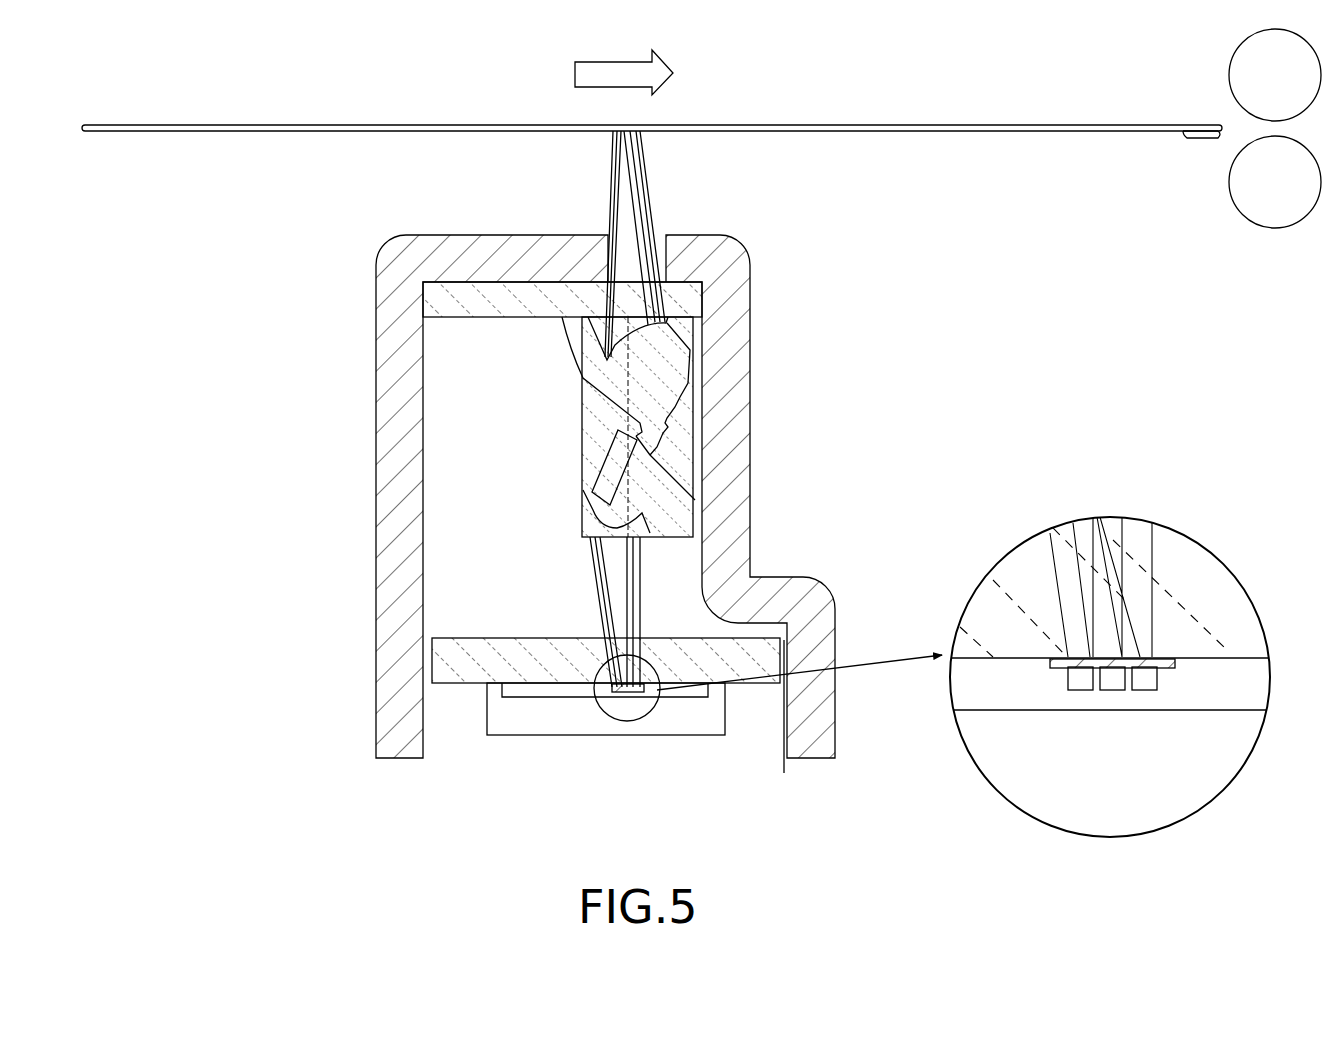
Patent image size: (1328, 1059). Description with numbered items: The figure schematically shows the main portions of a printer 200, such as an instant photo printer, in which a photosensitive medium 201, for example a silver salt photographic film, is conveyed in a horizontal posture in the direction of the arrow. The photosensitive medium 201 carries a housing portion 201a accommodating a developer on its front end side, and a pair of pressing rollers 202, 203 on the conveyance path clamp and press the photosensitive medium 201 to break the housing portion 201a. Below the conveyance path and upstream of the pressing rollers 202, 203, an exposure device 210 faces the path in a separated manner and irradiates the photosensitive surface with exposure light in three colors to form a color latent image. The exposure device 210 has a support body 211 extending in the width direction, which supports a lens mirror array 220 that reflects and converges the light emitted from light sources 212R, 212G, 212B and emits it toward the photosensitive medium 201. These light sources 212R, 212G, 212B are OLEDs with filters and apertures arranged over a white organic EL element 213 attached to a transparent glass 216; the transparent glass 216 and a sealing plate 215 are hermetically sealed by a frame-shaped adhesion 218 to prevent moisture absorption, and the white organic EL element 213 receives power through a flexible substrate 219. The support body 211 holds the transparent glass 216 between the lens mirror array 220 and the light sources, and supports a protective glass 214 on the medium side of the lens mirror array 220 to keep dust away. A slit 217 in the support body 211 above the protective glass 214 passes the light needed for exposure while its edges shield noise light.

The printer 200 is at (701, 140).
The photosensitive medium 201 is at (180, 123).
The housing portion 201a is at (1206, 140).
The pressing roller 202 is at (1228, 72).
The pressing roller 203 is at (1269, 229).
The exposure device 210 is at (659, 482).
The support body 211 is at (737, 455).
The light source 212R is at (1078, 692).
The light source 212G is at (1122, 750).
The light source 212B is at (1160, 692).
The white organic EL element 213 is at (1115, 704).
The protective glass 214 is at (486, 318).
The sealing plate 215 is at (487, 716).
The transparent glass 216 is at (497, 636).
The slit 217 is at (650, 228).
The adhesion 218 is at (725, 695).
The flexible substrate 219 is at (783, 775).
The lens mirror array 220 is at (687, 364).